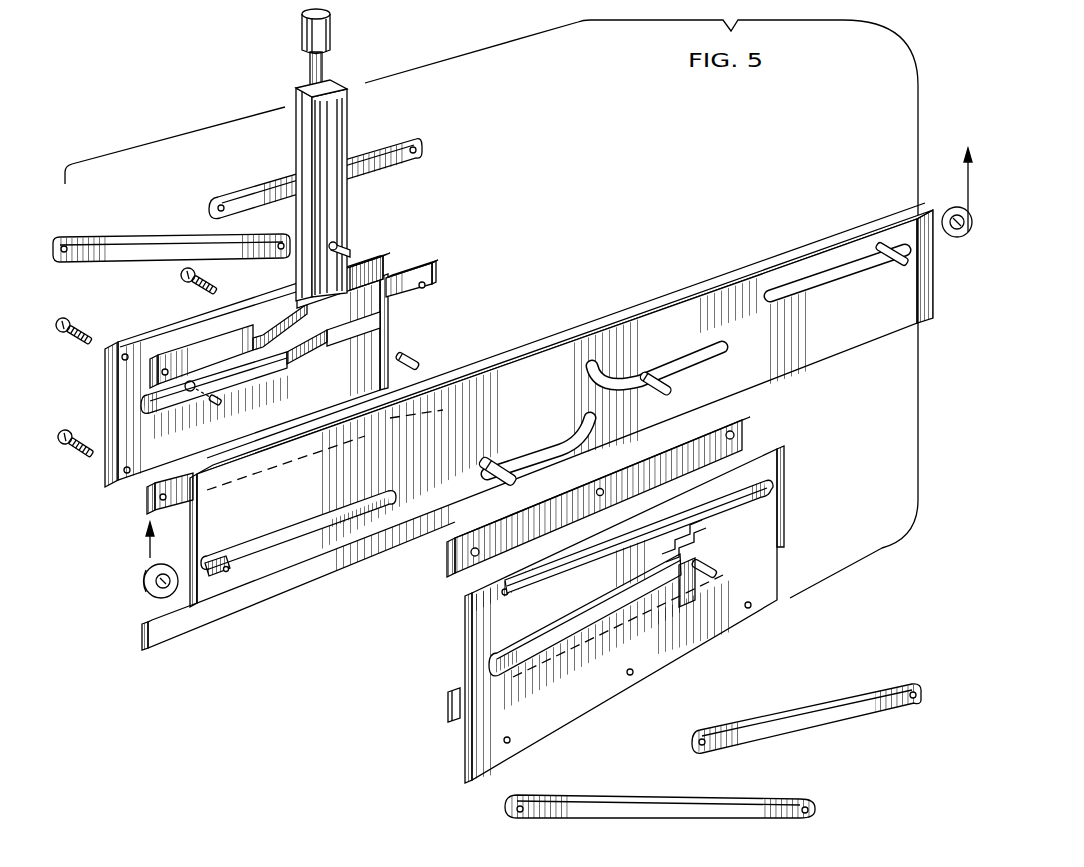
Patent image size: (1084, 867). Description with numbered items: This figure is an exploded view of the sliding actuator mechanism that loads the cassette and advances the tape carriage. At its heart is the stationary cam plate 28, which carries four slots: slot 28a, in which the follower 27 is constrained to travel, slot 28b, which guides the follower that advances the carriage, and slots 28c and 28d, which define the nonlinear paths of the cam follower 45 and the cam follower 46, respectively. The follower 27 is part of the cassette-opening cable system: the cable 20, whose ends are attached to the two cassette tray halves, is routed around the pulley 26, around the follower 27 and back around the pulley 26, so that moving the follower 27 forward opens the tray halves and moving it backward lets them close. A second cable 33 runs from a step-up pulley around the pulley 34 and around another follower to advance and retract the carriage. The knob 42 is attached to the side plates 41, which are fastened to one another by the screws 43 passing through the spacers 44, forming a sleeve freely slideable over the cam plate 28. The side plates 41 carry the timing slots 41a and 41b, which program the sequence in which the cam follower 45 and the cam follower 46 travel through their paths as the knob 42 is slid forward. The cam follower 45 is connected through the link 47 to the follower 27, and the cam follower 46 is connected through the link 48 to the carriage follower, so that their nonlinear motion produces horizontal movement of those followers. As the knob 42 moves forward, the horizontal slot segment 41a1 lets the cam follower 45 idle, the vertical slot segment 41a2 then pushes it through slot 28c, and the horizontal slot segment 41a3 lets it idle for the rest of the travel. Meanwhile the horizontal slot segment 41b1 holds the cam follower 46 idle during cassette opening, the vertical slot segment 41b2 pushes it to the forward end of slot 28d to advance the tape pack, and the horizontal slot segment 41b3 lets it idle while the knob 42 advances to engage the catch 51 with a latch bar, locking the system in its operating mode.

The cable 20 is at (147, 554).
The pulley 26 is at (150, 600).
The follower 27 is at (226, 579).
The cam plate 28 is at (537, 426).
The slot 28a is at (313, 522).
The slot 28b is at (832, 292).
The slot 28c is at (560, 440).
The slot 28d is at (716, 346).
The cable 33 is at (966, 180).
The pulley 34 is at (962, 238).
The side plates 41 is at (780, 520).
The slot 41a is at (220, 404).
The horizontal slot segment 41a1 is at (705, 582).
The vertical slot segment 41a2 is at (696, 564).
The horizontal slot segment 41a3 is at (533, 664).
The slot 41b is at (372, 338).
The horizontal slot segment 41b1 is at (748, 484).
The vertical slot segment 41b2 is at (672, 528).
The horizontal slot segment 41b3 is at (663, 556).
The knob 42 is at (304, 33).
The screws 43 is at (78, 440).
The spacers 44 is at (423, 385).
The cam follower 45 is at (497, 485).
The cam follower 46 is at (660, 390).
The link 47 is at (140, 240).
The link 48 is at (245, 195).
The catch 51 is at (410, 350).